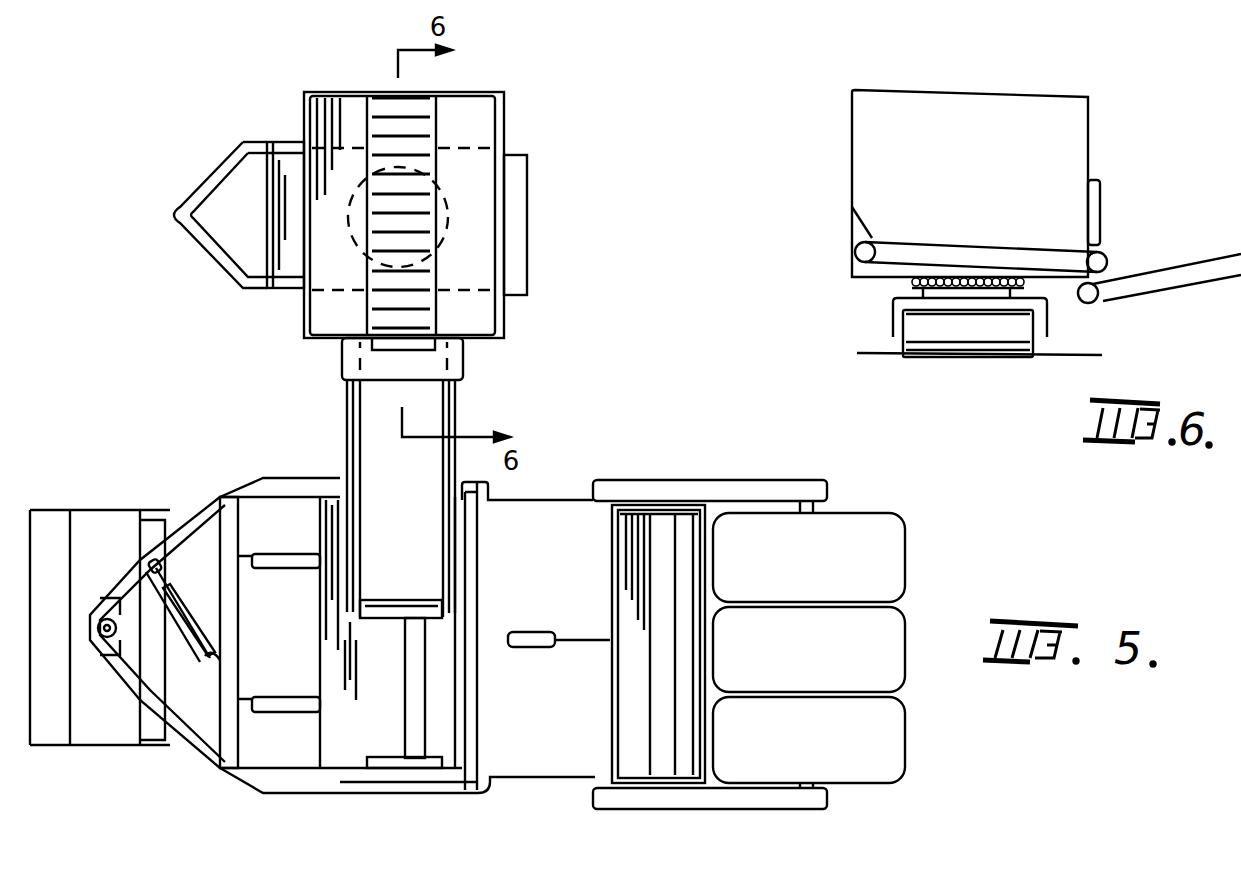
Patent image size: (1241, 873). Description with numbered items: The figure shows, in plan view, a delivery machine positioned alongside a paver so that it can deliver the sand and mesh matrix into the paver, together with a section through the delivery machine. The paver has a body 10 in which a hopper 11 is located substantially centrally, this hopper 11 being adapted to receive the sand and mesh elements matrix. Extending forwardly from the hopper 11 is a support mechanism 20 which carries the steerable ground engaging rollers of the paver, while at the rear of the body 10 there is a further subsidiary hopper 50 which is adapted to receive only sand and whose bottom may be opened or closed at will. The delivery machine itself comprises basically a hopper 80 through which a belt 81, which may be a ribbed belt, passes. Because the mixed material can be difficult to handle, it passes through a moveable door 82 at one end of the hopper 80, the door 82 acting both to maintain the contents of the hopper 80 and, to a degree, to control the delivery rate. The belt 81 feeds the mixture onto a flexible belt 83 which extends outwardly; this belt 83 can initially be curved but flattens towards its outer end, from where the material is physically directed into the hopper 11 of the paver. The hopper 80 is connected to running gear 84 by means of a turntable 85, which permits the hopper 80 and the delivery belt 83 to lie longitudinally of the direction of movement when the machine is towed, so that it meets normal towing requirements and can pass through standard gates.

In FIG. 5, the body 10 is at (502, 784).
In FIG. 5, the hopper 11 is at (390, 732).
In FIG. 5, the support mechanism 20 is at (116, 500).
In FIG. 5, the subsidiary hopper 50 is at (667, 543).
In FIG. 5, the hopper 80 is at (477, 138).
In FIG. 6, the hopper 80 is at (1057, 130).
In FIG. 5, the belt 81 is at (398, 138).
In FIG. 6, the belt 81 is at (958, 242).
In FIG. 5, the moveable door 82 is at (420, 352).
In FIG. 6, the moveable door 82 is at (1103, 190).
In FIG. 5, the flexible belt 83 is at (385, 513).
In FIG. 6, the flexible belt 83 is at (1180, 278).
In FIG. 5, the running gear 84 is at (517, 262).
In FIG. 6, the running gear 84 is at (980, 335).
In FIG. 5, the turntable 85 is at (455, 220).
In FIG. 6, the turntable 85 is at (907, 280).